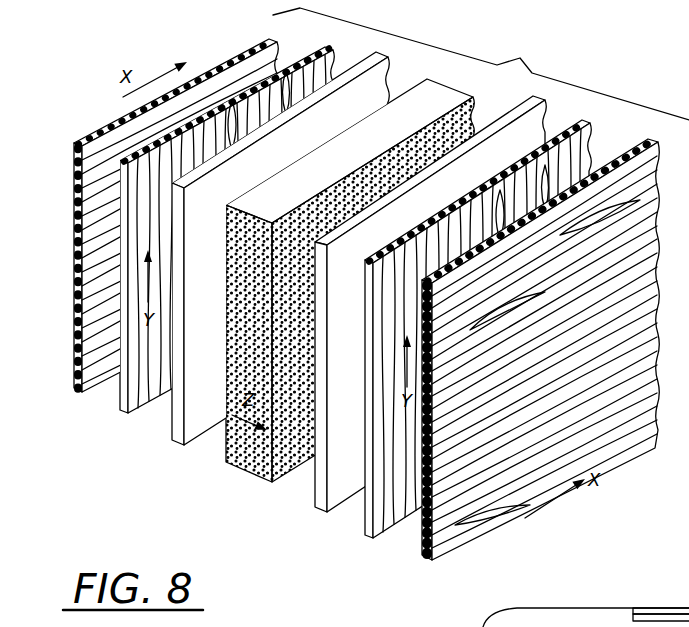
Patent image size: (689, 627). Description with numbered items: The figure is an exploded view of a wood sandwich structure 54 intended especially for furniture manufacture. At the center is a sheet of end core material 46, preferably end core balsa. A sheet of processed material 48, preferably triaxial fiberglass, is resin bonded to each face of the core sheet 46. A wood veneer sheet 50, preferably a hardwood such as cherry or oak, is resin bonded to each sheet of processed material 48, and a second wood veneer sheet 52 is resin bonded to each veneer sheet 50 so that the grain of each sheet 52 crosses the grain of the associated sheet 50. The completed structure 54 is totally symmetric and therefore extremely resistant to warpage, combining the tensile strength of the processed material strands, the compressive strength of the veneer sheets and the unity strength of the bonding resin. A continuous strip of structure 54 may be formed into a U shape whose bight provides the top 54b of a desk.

The central sheet of end core material 46 is at (256, 470).
The sheet of processed material 48 is at (177, 440).
The wood veneer sheet 50 is at (125, 413).
The second wood veneer sheet 52 is at (79, 391).
The wood sandwich structure 54 is at (584, 604).
The top of the desk 54b is at (615, 607).